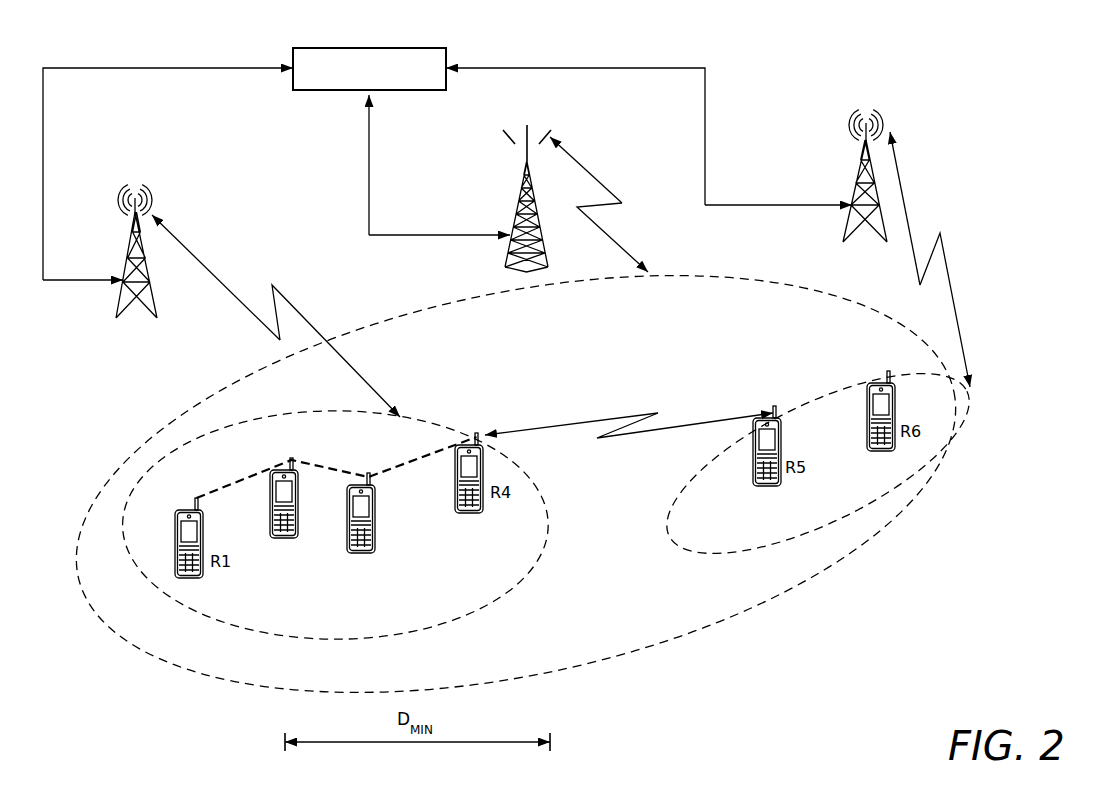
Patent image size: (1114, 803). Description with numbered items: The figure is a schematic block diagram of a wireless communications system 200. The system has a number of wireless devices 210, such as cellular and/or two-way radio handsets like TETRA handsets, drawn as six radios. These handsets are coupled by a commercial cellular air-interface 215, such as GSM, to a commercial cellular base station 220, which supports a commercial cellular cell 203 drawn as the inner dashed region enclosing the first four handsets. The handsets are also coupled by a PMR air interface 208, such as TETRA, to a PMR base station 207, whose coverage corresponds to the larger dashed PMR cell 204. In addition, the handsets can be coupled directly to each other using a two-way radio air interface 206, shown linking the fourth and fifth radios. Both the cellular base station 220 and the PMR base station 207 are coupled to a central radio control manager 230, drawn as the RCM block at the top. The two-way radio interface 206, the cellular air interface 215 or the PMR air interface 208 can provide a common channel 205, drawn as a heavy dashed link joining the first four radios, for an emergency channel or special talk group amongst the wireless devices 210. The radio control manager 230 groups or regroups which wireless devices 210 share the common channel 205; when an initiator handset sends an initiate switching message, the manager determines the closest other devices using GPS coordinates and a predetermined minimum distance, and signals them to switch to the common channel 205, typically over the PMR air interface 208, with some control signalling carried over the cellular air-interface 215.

The wireless communications system 200 is at (106, 41).
The radio control manager 230 is at (308, 47).
The commercial cellular base station 220 is at (152, 293).
The commercial cellular air-interface 215 is at (289, 302).
The PMR base station 207 is at (518, 201).
The PMR air interface 208 is at (611, 192).
The common channel 205 is at (333, 468).
The two-way radio air interface 206 is at (568, 422).
The commercial cellular cell 203 is at (549, 520).
The PMR cell 204 is at (79, 566).
The wireless device 210 is at (287, 538).